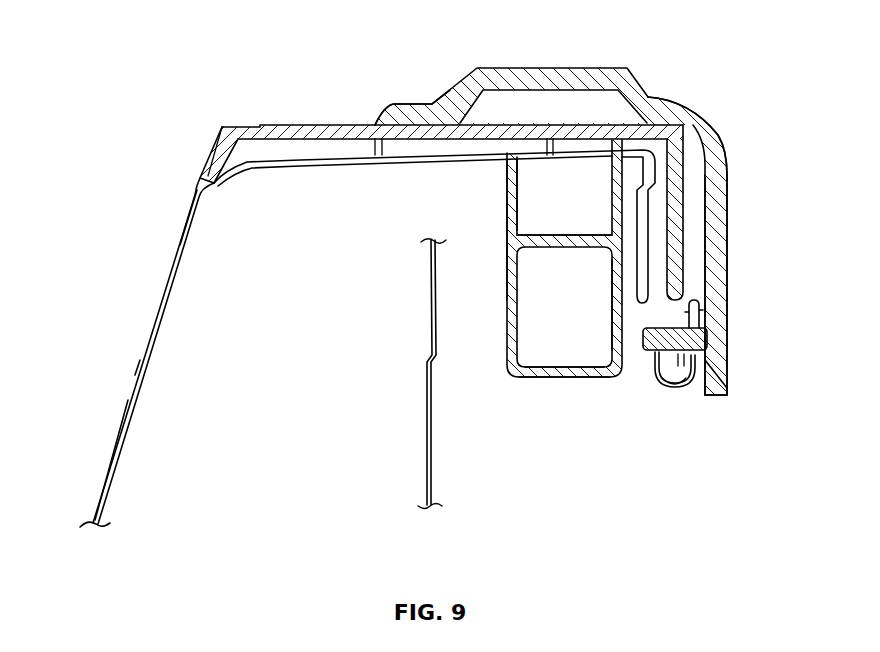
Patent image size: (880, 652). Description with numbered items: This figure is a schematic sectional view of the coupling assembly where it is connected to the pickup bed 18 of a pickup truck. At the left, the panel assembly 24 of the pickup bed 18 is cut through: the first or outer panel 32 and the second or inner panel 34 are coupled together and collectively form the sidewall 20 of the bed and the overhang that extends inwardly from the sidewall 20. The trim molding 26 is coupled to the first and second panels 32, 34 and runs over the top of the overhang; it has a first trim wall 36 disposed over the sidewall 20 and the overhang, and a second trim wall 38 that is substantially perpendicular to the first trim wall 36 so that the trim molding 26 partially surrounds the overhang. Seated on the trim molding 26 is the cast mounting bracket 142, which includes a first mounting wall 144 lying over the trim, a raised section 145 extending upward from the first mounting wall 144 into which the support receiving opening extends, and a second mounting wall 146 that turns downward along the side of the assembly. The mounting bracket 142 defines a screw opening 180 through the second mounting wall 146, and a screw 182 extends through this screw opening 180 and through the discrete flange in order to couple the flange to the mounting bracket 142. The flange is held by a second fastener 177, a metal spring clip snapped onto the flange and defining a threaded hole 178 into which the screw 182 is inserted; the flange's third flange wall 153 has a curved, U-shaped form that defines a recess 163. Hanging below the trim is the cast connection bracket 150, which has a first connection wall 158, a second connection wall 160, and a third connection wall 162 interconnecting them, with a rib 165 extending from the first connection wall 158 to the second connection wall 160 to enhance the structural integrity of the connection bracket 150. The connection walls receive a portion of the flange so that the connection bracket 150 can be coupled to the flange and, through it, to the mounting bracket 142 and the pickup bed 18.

The pickup bed 18 is at (157, 308).
The sidewall 20 is at (130, 397).
The panel assembly 24 is at (122, 350).
The trim molding 26 is at (287, 124).
The first panel 32 is at (185, 215).
The second panel 34 is at (430, 348).
The first trim wall 36 is at (362, 124).
The second trim wall 38 is at (683, 178).
The mounting bracket 142 is at (707, 110).
The first mounting wall 144 is at (428, 104).
The raised section 145 is at (562, 68).
The second mounting wall 146 is at (718, 262).
The connection bracket 150 is at (508, 370).
The third flange wall 153 is at (674, 390).
The first connection wall 158 is at (612, 280).
The second connection wall 160 is at (508, 212).
The third connection wall 162 is at (559, 379).
The recess 163 is at (684, 390).
The rib 165 is at (540, 234).
The second fastener 177 is at (667, 360).
The threaded hole 178 is at (710, 338).
The screw opening 180 is at (700, 320).
The screw 182 is at (720, 382).